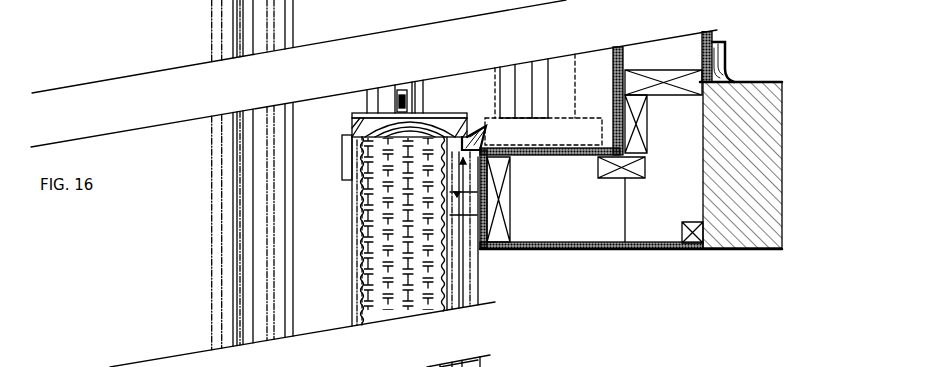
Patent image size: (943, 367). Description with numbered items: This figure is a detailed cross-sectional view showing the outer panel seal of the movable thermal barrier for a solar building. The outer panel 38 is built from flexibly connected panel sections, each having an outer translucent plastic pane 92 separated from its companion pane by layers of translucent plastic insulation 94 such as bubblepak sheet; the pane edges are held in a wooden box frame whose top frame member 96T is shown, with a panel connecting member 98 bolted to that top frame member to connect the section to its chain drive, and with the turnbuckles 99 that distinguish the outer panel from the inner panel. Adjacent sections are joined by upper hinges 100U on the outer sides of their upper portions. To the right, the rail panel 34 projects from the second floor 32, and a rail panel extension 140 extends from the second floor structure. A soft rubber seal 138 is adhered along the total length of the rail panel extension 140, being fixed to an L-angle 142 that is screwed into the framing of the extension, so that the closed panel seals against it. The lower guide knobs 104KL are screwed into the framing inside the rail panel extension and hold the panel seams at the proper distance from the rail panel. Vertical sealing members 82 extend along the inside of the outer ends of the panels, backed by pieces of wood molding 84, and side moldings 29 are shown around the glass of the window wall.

The side moldings 29 is at (232, 239).
The second floor 32 is at (757, 115).
The rail panel 34 is at (682, 32).
The outer panel 38 is at (395, 273).
The vertical sealing members 82 is at (459, 301).
The wood molding 84 is at (483, 360).
The translucent plastic pane 92 is at (360, 227).
The translucent plastic insulation 94 is at (500, 366).
The top frame member 96T is at (365, 137).
The panel connecting member 98 is at (360, 117).
The turnbuckle 99 is at (400, 82).
The upper hinge 100U is at (343, 180).
The lower guide knob 104KL is at (468, 242).
The soft rubber seal 138 is at (478, 120).
The rail panel extension 140 is at (716, 58).
The L-angle 142 is at (464, 218).